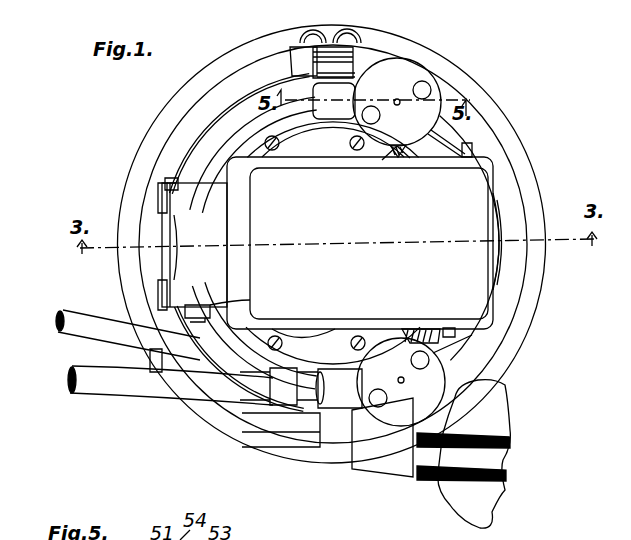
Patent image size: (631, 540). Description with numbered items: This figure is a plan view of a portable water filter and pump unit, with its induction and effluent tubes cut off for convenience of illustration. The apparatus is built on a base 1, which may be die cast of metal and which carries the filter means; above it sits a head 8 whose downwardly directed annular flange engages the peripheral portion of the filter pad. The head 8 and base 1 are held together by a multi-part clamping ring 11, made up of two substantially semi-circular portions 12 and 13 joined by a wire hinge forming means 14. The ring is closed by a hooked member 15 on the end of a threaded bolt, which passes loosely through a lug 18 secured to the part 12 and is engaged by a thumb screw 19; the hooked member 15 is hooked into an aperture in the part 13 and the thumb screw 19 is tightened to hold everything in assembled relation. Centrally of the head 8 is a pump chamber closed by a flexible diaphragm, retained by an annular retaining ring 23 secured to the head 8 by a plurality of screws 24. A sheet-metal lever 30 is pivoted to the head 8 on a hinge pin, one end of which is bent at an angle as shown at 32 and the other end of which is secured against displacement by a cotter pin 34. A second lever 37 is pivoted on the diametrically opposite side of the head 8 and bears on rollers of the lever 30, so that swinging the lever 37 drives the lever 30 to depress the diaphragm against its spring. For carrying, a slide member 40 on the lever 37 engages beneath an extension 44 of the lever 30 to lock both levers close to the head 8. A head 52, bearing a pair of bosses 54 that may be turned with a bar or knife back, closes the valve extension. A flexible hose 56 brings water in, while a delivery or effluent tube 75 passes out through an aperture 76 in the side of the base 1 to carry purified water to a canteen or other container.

The base 1 is at (543, 322).
The head 8 is at (200, 128).
The clamping ring 11 is at (218, 437).
The semi-circular portion 12 is at (500, 141).
The semi-circular portion 13 is at (160, 185).
The wire hinge forming means 14 is at (346, 42).
The hooked member 15 is at (307, 456).
The lug 18 is at (388, 468).
The thumb screw 19 is at (497, 507).
The annular retaining ring 23 is at (328, 150).
The screws 24 is at (272, 150).
The lever 30 is at (236, 245).
The bent end of hinge pin 32 is at (192, 306).
The cotter pin 34 is at (170, 180).
The lever 37 is at (480, 277).
The slide member 40 is at (305, 340).
The extension 44 is at (208, 307).
The head 52 is at (405, 72).
The bosses 54 is at (385, 84).
The flexible hose 56 is at (115, 385).
The effluent tube 75 is at (60, 313).
The aperture 76 is at (150, 352).